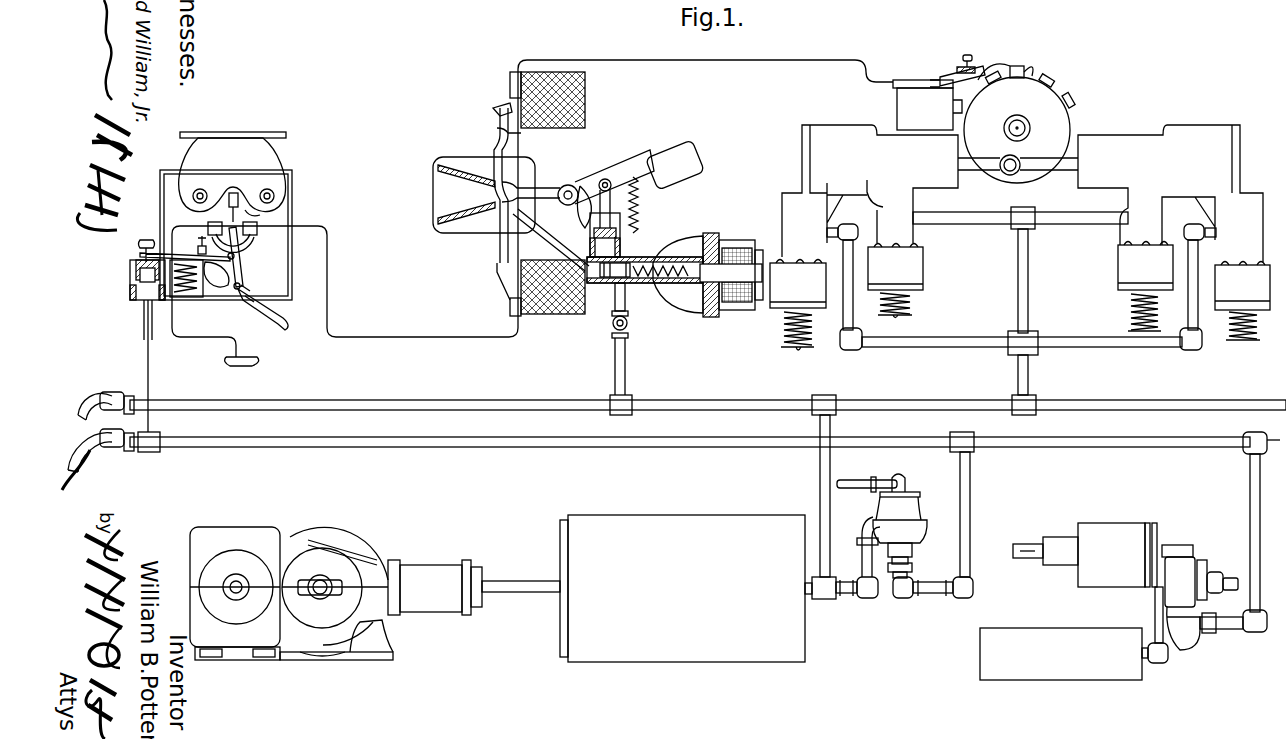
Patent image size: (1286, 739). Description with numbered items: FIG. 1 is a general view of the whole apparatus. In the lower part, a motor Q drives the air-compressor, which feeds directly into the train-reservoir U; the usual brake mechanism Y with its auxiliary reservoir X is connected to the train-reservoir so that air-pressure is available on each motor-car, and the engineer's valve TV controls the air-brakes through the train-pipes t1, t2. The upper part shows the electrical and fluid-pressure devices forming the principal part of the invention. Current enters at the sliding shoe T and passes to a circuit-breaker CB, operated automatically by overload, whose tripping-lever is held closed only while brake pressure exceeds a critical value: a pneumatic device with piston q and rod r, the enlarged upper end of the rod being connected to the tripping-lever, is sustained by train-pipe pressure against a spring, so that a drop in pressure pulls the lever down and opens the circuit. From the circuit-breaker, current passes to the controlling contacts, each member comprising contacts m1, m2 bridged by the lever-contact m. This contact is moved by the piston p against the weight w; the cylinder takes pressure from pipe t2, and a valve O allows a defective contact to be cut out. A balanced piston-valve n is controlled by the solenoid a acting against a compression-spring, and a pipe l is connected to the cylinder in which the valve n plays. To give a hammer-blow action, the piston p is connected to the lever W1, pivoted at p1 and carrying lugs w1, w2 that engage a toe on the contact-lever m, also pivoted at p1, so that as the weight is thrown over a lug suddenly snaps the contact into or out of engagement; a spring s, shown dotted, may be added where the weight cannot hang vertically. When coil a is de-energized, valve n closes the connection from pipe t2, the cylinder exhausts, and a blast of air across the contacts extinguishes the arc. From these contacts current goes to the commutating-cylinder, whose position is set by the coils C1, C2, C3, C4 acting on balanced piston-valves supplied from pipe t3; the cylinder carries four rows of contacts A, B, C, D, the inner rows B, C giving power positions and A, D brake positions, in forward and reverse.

The row of contacts A is at (987, 76).
The row of contacts B is at (1019, 66).
The row of contacts C is at (1047, 77).
The row of contacts D is at (1071, 96).
The piston p is at (622, 243).
The circuit-breaker CB is at (290, 208).
The piston q is at (130, 278).
The rod r is at (146, 233).
The auxiliary reservoir X is at (186, 292).
The point of entrance of current T is at (262, 356).
The train-pipe t1 is at (671, 524).
The train-pipe t2 is at (682, 397).
The pipe t3 is at (1030, 382).
The contact m2 is at (497, 135).
The contact m1 is at (490, 252).
The lever-contact m is at (505, 180).
The lug w2 is at (578, 214).
The lever W1 is at (633, 174).
The weight w is at (680, 155).
The lug w1 is at (603, 177).
The pivot p1 is at (592, 200).
The spring s is at (641, 208).
The pipe l is at (534, 226).
The solenoid a is at (735, 250).
The piston-valve n is at (606, 300).
The valve O is at (628, 323).
The coil C1 is at (780, 292).
The coil C2 is at (920, 267).
The coil C3 is at (1120, 270).
The coil C4 is at (1224, 312).
The motor Q is at (360, 562).
The train-reservoir U is at (665, 520).
The engineer's valve TV is at (915, 510).
The brake mechanism Y is at (1115, 525).